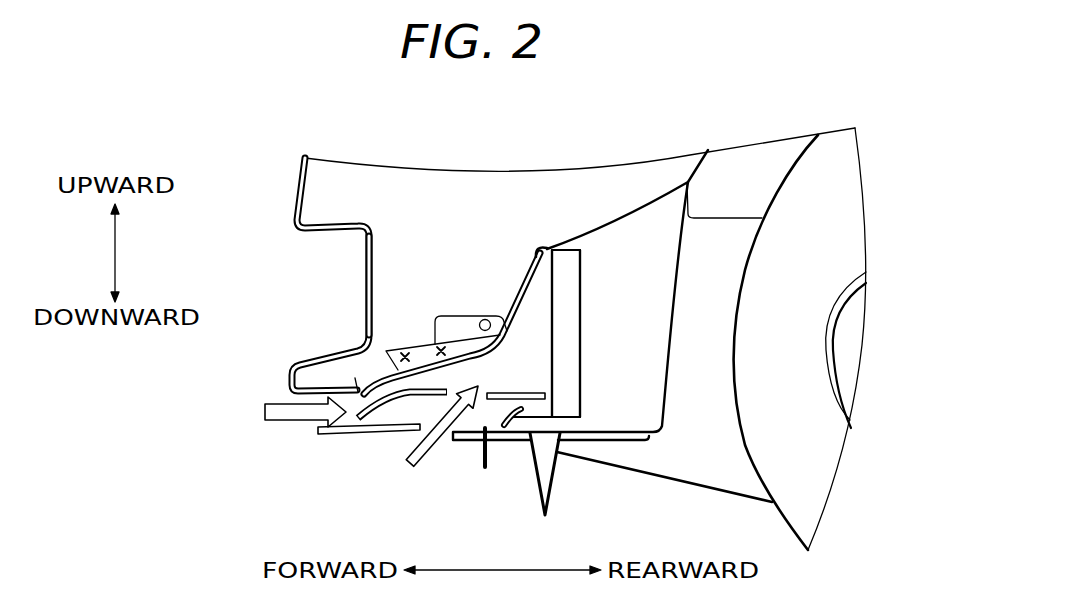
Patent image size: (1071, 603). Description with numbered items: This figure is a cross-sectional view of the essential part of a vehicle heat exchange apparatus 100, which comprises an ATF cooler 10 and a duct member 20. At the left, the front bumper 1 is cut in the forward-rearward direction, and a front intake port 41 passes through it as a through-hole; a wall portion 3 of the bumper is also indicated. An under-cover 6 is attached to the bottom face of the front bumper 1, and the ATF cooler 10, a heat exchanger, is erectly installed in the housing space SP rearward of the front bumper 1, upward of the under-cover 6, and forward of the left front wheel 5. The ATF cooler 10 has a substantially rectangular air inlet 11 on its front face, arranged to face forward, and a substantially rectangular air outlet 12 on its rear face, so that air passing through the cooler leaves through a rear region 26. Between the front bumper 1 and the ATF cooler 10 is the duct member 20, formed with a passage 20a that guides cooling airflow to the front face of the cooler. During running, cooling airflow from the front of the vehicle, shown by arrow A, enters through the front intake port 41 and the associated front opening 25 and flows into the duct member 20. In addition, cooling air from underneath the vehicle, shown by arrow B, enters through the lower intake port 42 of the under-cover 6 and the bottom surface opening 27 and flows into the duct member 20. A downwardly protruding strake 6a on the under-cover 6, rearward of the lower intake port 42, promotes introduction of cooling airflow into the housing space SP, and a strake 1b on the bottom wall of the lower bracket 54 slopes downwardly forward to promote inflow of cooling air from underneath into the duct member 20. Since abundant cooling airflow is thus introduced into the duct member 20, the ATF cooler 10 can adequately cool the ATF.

The front bumper 1 is at (307, 260).
The cowl side wall 3 is at (364, 297).
The left front wheel 5 is at (748, 457).
The under-cover 6 is at (587, 440).
The strake 6a is at (492, 453).
The ATF cooler 10 is at (576, 305).
The air inlet 11 is at (551, 338).
The air outlet 12 is at (581, 317).
The drain portion 1b is at (547, 492).
The duct member 20 is at (521, 318).
The passage 20a is at (432, 383).
The front opening 25 is at (360, 403).
The air passage 26 is at (543, 296).
The bottom surface opening 27 is at (480, 400).
The front intake port 41 is at (300, 398).
The lower intake port 42 is at (449, 428).
The lower bracket 54 is at (514, 428).
The vehicle heat exchange apparatus 100 is at (524, 192).
The cooling airflow from the front A is at (292, 414).
The cooling airflow from underneath B is at (435, 437).
The housing space SP is at (625, 413).